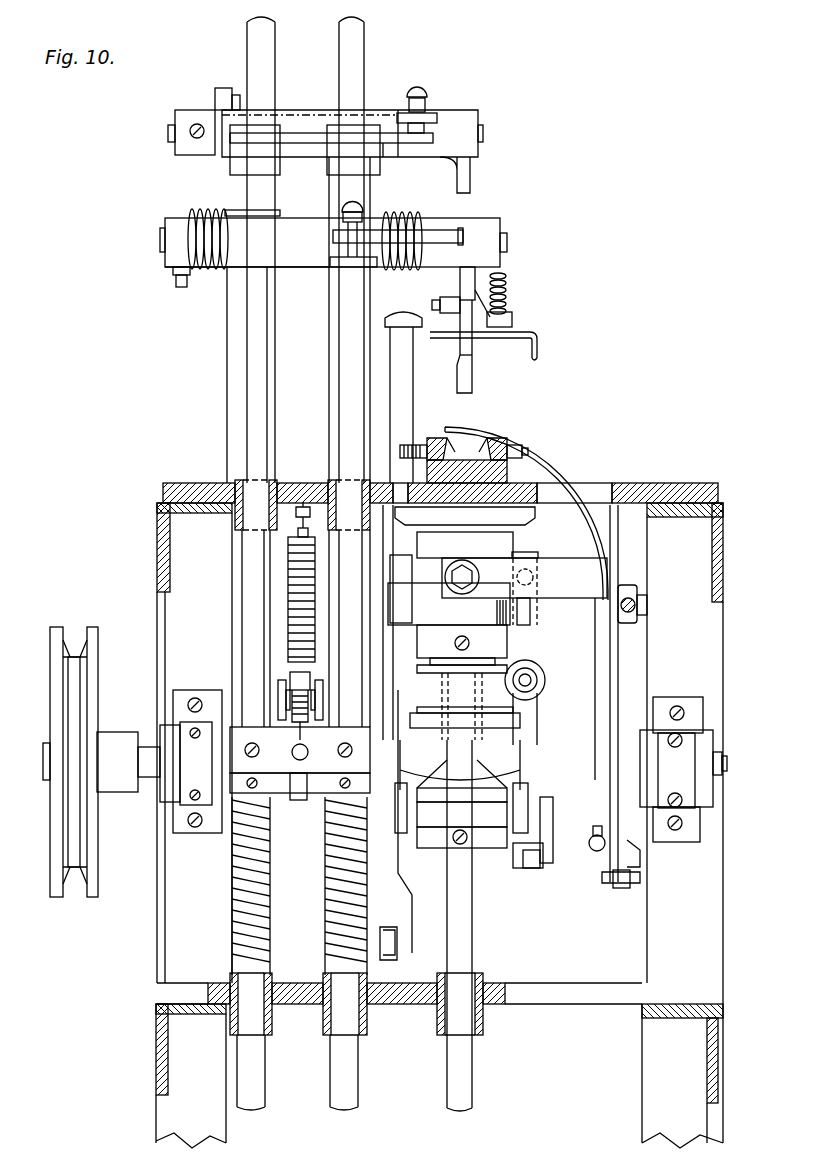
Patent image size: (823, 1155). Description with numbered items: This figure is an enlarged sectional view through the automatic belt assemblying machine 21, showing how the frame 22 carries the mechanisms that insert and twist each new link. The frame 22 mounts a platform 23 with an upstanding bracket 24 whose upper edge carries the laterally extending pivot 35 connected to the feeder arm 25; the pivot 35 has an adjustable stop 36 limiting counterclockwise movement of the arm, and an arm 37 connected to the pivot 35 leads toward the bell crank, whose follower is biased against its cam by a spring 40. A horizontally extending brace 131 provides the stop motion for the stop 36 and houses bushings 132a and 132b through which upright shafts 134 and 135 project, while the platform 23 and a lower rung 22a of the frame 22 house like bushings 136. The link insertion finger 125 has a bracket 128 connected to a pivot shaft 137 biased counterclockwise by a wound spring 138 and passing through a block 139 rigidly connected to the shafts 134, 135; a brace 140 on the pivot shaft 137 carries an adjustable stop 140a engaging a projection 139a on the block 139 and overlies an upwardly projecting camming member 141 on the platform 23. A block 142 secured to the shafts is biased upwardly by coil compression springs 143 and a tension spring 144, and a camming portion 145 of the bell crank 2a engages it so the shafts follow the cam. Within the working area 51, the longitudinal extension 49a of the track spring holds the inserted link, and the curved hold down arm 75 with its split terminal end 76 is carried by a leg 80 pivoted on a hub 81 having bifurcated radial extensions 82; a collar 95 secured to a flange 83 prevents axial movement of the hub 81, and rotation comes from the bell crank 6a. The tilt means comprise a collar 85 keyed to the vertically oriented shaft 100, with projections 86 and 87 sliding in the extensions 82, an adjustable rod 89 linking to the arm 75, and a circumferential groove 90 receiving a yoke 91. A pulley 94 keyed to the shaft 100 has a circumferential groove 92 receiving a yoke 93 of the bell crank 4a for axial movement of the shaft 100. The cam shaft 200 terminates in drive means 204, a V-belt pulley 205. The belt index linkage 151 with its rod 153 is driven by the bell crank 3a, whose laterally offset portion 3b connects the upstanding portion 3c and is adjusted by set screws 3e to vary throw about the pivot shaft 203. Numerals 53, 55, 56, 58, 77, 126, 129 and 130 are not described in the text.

The automatic belt assemblying machine 21 is at (511, 221).
The frame 22 is at (158, 528).
The lower rung 22a is at (168, 983).
The platform 23 is at (204, 483).
The upstanding bracket 24 is at (228, 366).
The feeder arm 25 is at (502, 195).
The laterally extending pivot 35 is at (480, 134).
The adjustable stop 36 is at (423, 88).
The arm 37 is at (182, 110).
The spring 40 is at (232, 71).
The longitudinal extension 49a is at (540, 350).
The working area 51 is at (500, 419).
The pin 53 is at (518, 447).
The cam jaws 55 is at (483, 458).
The cam base 56 is at (509, 473).
The screw 58 is at (418, 445).
The curved hold down arm 75 is at (554, 454).
The split terminal end 76 is at (445, 427).
The roller 77 is at (555, 680).
The leg 80 is at (560, 560).
The hub 81 is at (457, 556).
The bifurcated radial extensions 82 is at (420, 588).
The flange 83 is at (535, 513).
The collar 85 is at (520, 707).
The projection 86 is at (400, 556).
The projection 87 is at (525, 558).
The adjustable rod 89 is at (530, 606).
The circumferential groove 90 is at (522, 718).
The yoke 91 is at (538, 745).
The circumferential groove 92 is at (478, 822).
The yoke 93 is at (532, 798).
The pulley 94 is at (498, 850).
The collar 95 is at (452, 647).
The vertically oriented shaft 100 is at (522, 940).
The link insertion finger 125 is at (520, 392).
The clip 126 is at (322, 700).
The bracket 128 is at (460, 282).
The screw 129 is at (440, 303).
The spring 130 is at (506, 295).
The horizontally extending brace 131 is at (305, 133).
The bushing 132a is at (336, 170).
The bushing 132b is at (232, 172).
The upright shaft 134 is at (268, 328).
The upright shaft 135 is at (350, 370).
The bushings 136 is at (330, 482).
The pivot shaft 137 is at (508, 245).
The wound spring 138 is at (204, 275).
The block 139 is at (306, 264).
The projection 139a is at (336, 258).
The brace 140 is at (442, 238).
The adjustable stop 140a is at (363, 205).
The camming member 141 is at (405, 398).
The block 142 is at (357, 748).
The coil compression springs 143 is at (345, 872).
The tension spring 144 is at (290, 618).
The camming portion 145 is at (290, 680).
The linkage 151 is at (680, 630).
The rod 153 is at (628, 590).
The cam shaft 200 is at (46, 770).
The pivot shaft 203 is at (728, 766).
The drive means 204 is at (90, 615).
The V-belt pulley 205 is at (98, 878).
The bell crank 2a is at (298, 804).
The bell crank 3a is at (620, 730).
The laterally offset portion 3b is at (603, 828).
The upstanding portion 3c is at (618, 655).
The set screws 3e is at (597, 852).
The bell crank 4a is at (541, 870).
The bell crank 6a is at (390, 870).